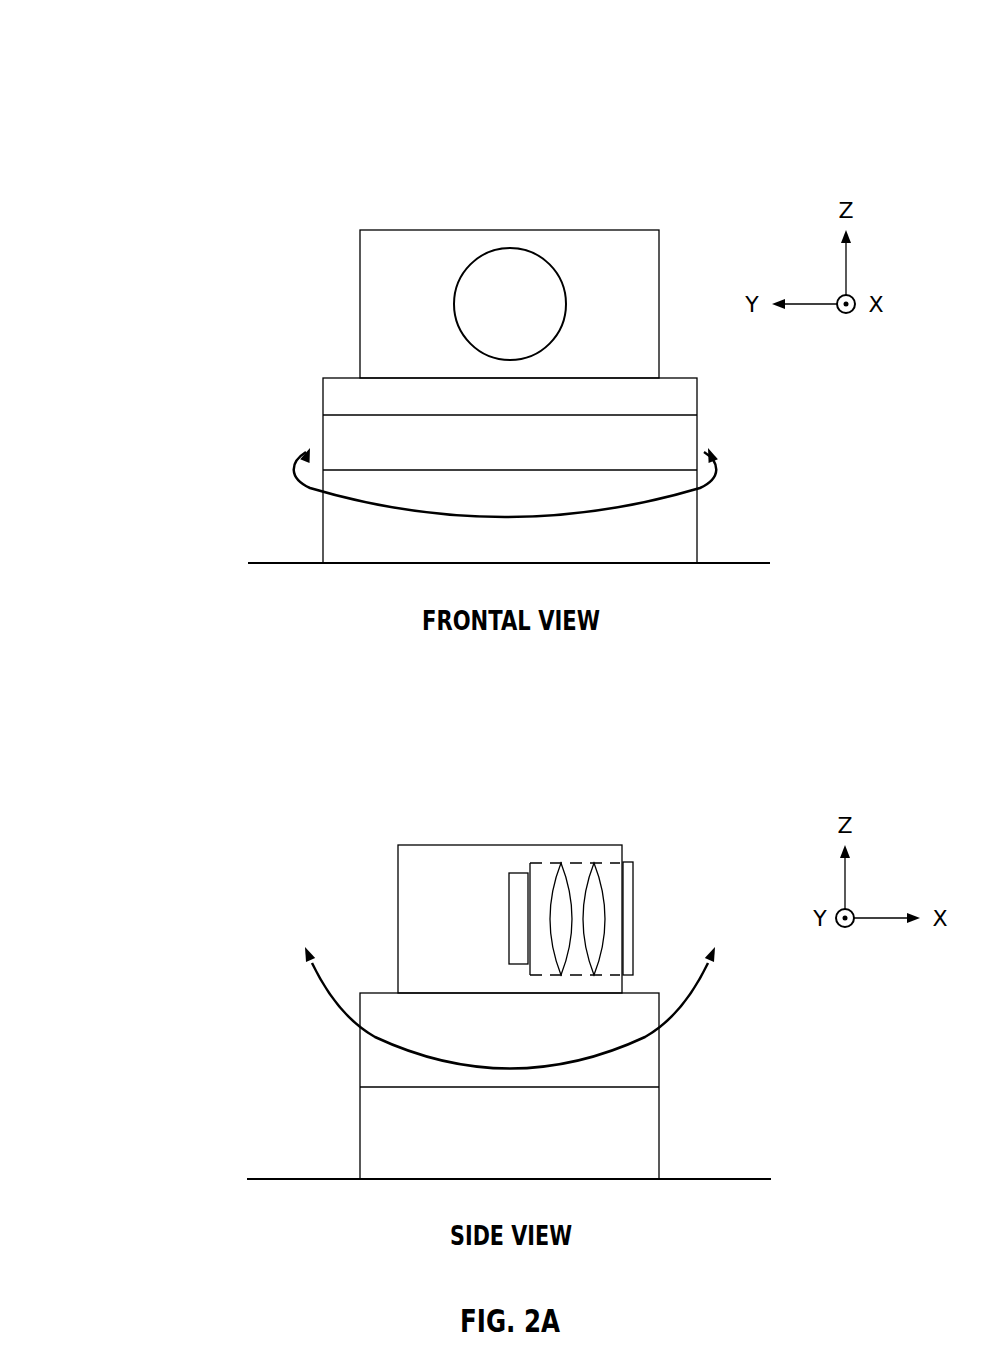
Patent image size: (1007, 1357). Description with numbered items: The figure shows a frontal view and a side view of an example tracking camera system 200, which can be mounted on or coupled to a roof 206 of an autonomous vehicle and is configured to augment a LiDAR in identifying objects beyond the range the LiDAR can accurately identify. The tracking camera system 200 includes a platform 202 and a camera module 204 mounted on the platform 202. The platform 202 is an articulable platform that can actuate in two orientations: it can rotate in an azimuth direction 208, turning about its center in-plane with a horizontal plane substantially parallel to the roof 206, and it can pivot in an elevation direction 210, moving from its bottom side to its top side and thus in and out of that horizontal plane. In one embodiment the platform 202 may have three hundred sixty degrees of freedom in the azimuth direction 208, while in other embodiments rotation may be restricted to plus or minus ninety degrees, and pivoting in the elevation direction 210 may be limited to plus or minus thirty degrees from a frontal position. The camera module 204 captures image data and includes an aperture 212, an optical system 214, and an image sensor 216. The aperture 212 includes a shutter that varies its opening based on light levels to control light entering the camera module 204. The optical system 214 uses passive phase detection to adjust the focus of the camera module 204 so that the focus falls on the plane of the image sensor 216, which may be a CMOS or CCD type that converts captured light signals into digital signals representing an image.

The tracking camera system 200 is at (95, 50).
The platform 202 is at (323, 397).
The camera module 204 is at (360, 248).
The roof 206 is at (752, 562).
The azimuth direction 208 is at (292, 470).
The elevation direction 210 is at (306, 973).
The aperture 212 is at (548, 258).
The optical system 214 is at (573, 863).
The image sensor 216 is at (518, 870).